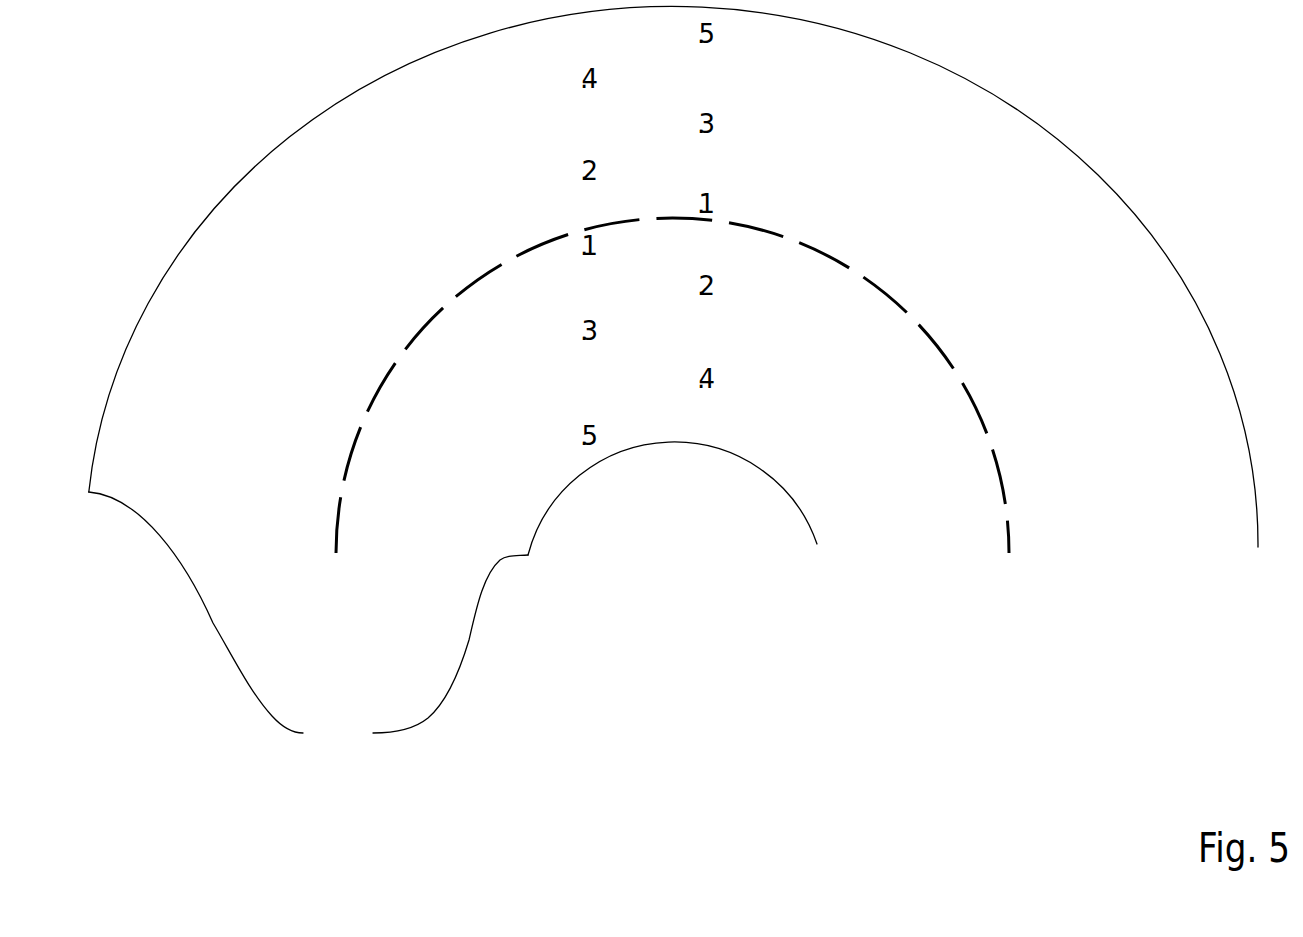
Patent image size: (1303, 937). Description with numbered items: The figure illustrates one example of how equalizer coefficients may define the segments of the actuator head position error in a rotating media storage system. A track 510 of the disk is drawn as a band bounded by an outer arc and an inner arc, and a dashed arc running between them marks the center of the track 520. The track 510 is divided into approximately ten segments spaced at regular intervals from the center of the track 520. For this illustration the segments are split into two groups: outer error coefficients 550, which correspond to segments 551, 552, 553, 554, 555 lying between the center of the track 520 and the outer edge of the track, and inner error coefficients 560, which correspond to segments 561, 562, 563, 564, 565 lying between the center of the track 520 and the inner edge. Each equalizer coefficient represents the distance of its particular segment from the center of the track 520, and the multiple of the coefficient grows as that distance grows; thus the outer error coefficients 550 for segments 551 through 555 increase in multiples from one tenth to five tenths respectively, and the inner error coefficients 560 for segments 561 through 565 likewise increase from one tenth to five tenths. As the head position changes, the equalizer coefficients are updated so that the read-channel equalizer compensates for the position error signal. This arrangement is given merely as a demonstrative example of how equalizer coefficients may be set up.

The track 510 is at (400, 733).
The center of the track 520 is at (1010, 537).
The outer error coefficients 550 is at (827, 250).
The segment 551 is at (651, 204).
The segment 552 is at (650, 171).
The segment 553 is at (651, 124).
The segment 554 is at (650, 79).
The segment 555 is at (651, 34).
The inner error coefficients 560 is at (909, 318).
The segment 561 is at (650, 246).
The segment 562 is at (651, 286).
The segment 563 is at (650, 331).
The segment 564 is at (651, 379).
The segment 565 is at (650, 428).